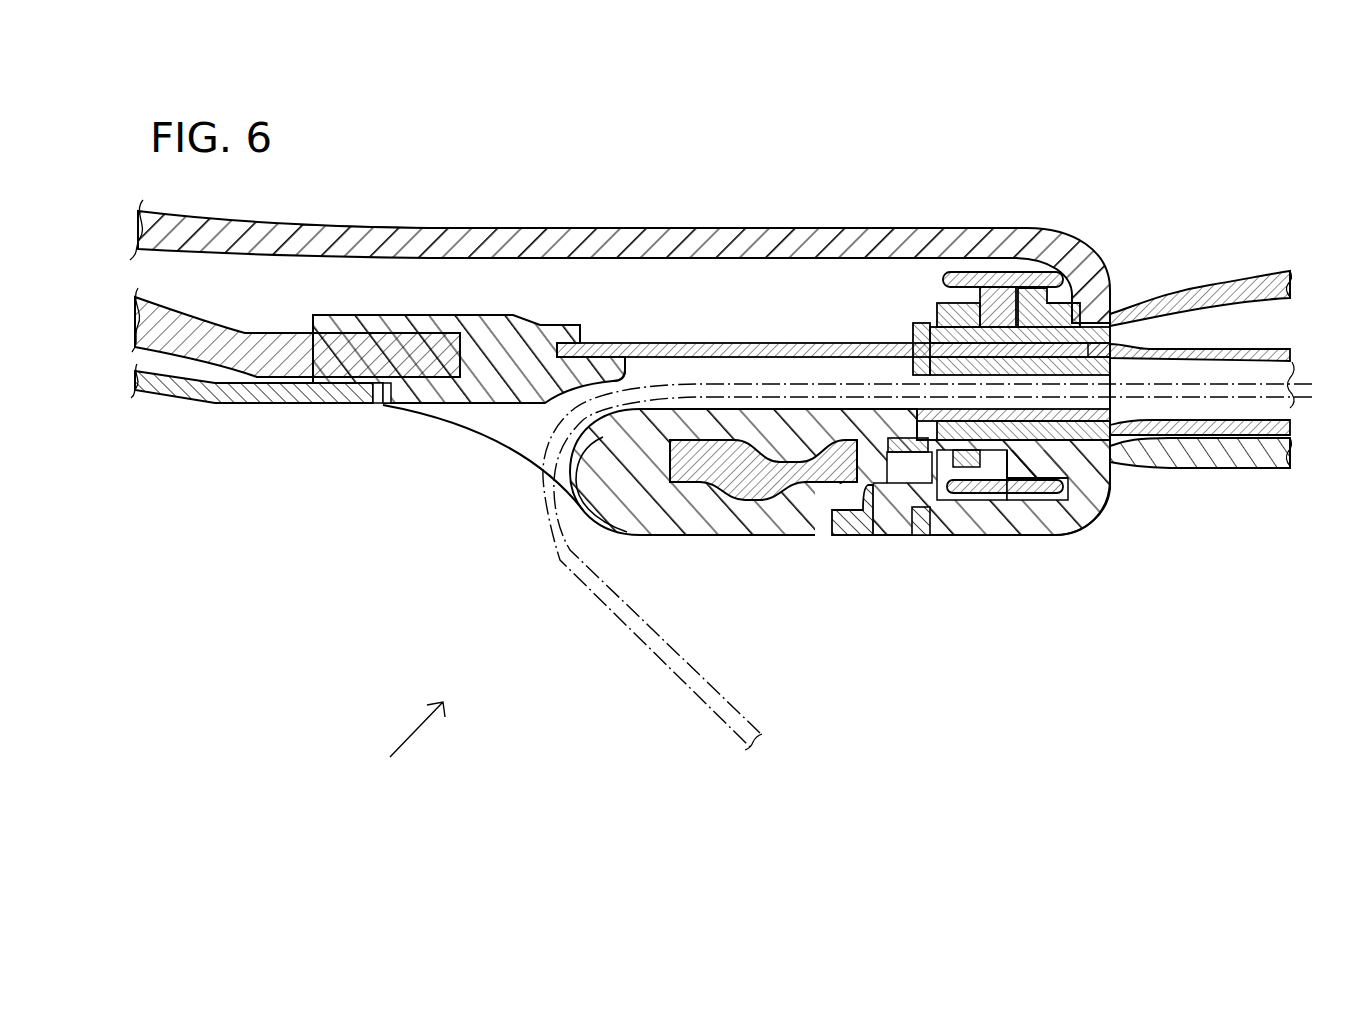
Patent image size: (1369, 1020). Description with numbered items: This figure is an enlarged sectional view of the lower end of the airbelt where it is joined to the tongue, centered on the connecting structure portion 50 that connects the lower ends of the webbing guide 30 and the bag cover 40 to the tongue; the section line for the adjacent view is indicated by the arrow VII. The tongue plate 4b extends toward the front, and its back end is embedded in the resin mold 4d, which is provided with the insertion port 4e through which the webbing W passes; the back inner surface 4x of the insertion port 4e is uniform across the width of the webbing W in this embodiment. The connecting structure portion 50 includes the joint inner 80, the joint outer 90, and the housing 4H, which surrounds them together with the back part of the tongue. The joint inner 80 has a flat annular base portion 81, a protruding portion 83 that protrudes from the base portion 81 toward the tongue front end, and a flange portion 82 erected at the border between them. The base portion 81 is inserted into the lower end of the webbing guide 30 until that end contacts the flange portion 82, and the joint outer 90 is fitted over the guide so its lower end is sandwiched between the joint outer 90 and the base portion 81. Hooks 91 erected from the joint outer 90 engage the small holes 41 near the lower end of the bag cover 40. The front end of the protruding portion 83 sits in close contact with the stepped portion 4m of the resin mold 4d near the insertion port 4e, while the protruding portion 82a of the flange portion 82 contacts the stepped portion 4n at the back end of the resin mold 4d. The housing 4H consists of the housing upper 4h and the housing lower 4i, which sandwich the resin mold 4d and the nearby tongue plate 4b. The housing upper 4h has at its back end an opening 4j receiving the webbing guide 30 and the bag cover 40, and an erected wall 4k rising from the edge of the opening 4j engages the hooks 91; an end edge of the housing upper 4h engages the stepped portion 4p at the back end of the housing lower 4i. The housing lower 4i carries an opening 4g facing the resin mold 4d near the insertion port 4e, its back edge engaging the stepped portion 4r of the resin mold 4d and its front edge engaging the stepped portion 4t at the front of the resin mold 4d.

The housing 4H is at (533, 214).
The housing upper 4h is at (363, 227).
The tongue plate 4b is at (217, 320).
The housing lower 4i is at (288, 405).
The stepped portion 4t is at (330, 405).
The opening 4g is at (366, 405).
The insertion port 4e is at (527, 430).
The back inner surface 4x is at (627, 518).
The resin mold 4d is at (737, 537).
The stepped portion 4m is at (612, 357).
The stepped portion 4r is at (813, 504).
The stepped portion 4n is at (905, 408).
The stepped portion 4p is at (922, 502).
The erected wall 4k is at (1053, 468).
The opening 4j is at (1100, 488).
The joint inner 80 is at (861, 378).
The protruding portion 83 is at (672, 343).
The flange portion 82 is at (912, 330).
The protruding portion 82a is at (900, 453).
The base portion 81 is at (1112, 367).
The joint outer 90 is at (1112, 346).
The connecting structure portion 50 is at (955, 394).
The small holes 41 is at (978, 312).
The hooks 91 is at (996, 273).
The bag cover 40 is at (1238, 280).
The webbing guide 30 is at (1265, 349).
The webbing W is at (1296, 380).
The section line VII is at (423, 733).